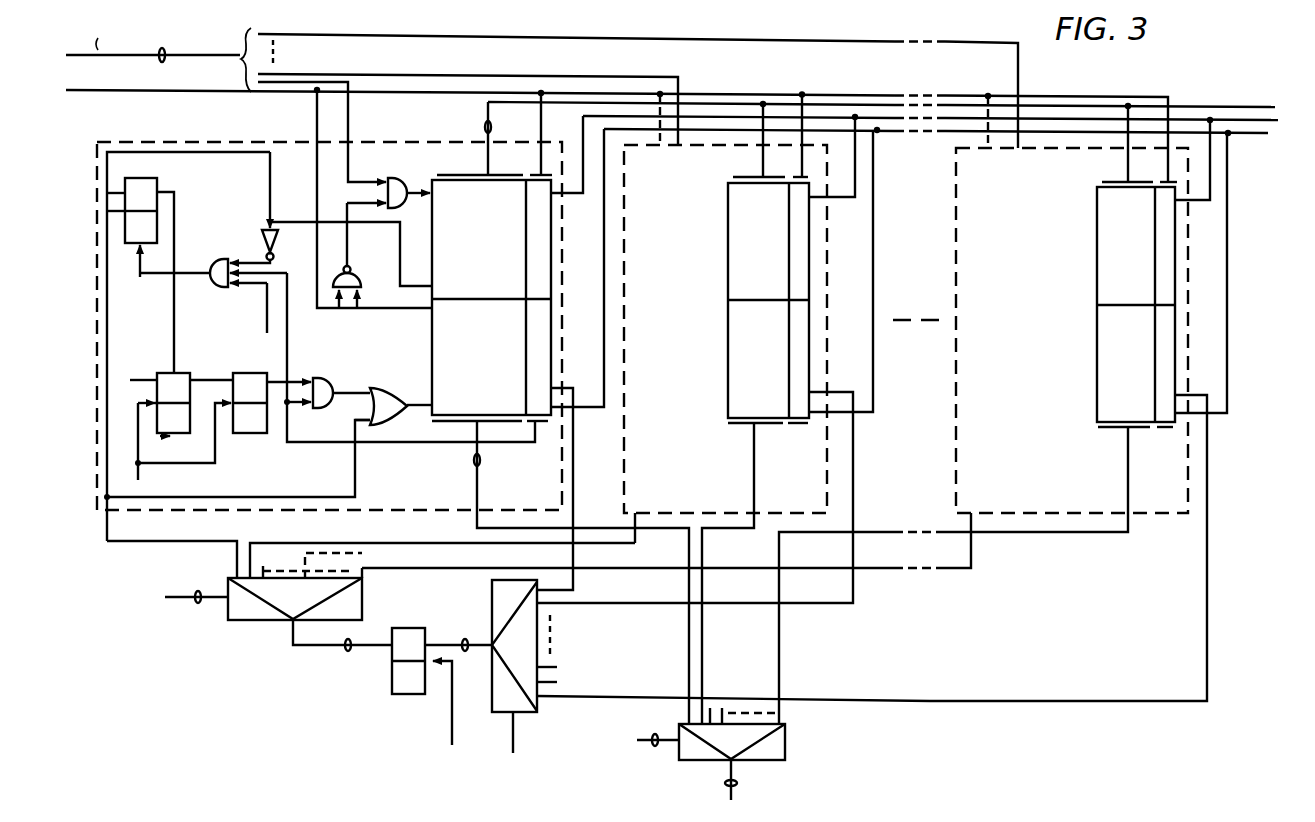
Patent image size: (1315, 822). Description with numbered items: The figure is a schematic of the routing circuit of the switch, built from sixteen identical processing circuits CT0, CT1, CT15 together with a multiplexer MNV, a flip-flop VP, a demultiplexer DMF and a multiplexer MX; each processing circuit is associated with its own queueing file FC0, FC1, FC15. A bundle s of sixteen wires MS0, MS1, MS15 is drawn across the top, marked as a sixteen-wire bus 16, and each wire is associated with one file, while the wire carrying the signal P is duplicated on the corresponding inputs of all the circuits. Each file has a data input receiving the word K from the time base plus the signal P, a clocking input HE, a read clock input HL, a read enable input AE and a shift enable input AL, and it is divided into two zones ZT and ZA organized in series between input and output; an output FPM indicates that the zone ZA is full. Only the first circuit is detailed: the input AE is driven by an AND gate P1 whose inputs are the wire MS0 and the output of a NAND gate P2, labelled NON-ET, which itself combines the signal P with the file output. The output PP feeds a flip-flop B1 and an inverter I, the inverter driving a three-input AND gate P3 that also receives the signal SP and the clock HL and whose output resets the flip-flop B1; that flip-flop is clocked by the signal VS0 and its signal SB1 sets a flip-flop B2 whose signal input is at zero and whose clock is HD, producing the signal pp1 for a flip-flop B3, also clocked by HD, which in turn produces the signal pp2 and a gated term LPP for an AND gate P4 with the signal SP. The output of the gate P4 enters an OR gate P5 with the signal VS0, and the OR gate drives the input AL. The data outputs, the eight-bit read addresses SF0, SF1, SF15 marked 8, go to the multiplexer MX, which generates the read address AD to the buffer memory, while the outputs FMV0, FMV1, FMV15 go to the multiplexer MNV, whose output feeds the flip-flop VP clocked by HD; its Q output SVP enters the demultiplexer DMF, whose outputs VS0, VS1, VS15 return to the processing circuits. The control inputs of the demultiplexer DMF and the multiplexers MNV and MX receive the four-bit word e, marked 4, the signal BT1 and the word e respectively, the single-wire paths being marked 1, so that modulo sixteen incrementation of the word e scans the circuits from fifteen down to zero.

The 16-bit bus width mark 16 is at (153, 46).
The signal p P is at (617, 105).
The wire MS0 is at (349, 115).
The wire MS1 is at (680, 75).
The wire MS15 is at (1022, 68).
The word k K is at (1262, 99).
The clocking input HE is at (1272, 119).
The read clock input HL is at (1262, 136).
The 8-bit width mark 8 is at (480, 126).
The queueing file FC0 is at (436, 354).
The queueing file FC1 is at (724, 353).
The queueing file FC15 is at (1096, 356).
The zone ZT is at (492, 298).
The zone ZA is at (476, 356).
The flip-flop B1 is at (158, 178).
The flip-flop B2 is at (163, 433).
The flip-flop B3 is at (238, 433).
The signal SB1 is at (147, 282).
The inverter I is at (279, 238).
The AND gate P1 is at (395, 178).
The NAND gate P2 is at (357, 268).
The three input AND gate P3 is at (220, 247).
The AND gate P4 is at (340, 387).
The OR gate P5 is at (386, 378).
The read enable input AE is at (419, 208).
The output PP is at (412, 286).
The output FPN FPM is at (411, 300).
The NAND gate NON-ET is at (348, 292).
The signal HD is at (449, 745).
The signal PP1 pp1 is at (212, 371).
The signal PP2 pp2 is at (302, 371).
The signal LPP is at (343, 410).
The shift enable input AL is at (419, 396).
The signal SP is at (531, 442).
The output FNV0 FMV0 is at (570, 374).
The output FNV1 FMV1 is at (855, 440).
The output FNV15 FMV15 is at (1210, 452).
The read address SF0 is at (476, 480).
The read address SF1 is at (755, 468).
The read address SF15 is at (1131, 470).
The processing circuit CT0 is at (185, 506).
The processing circuit CT1 is at (624, 496).
The processing circuit CT15 is at (946, 493).
The signal VS0 is at (168, 540).
The signal VS1 is at (289, 550).
The signal VS15 is at (447, 570).
The demultiplexer DMF is at (365, 590).
The signal e is at (163, 600).
The 4-bit width mark 4 is at (424, 660).
The 1-bit width mark 1 is at (410, 634).
The signal SVP is at (316, 651).
The flip-flop VP is at (410, 626).
The multiplexer MNV is at (530, 713).
The signal BT1 is at (517, 746).
The multiplexer MX is at (788, 747).
The output bus AD(0-7) AD is at (770, 787).